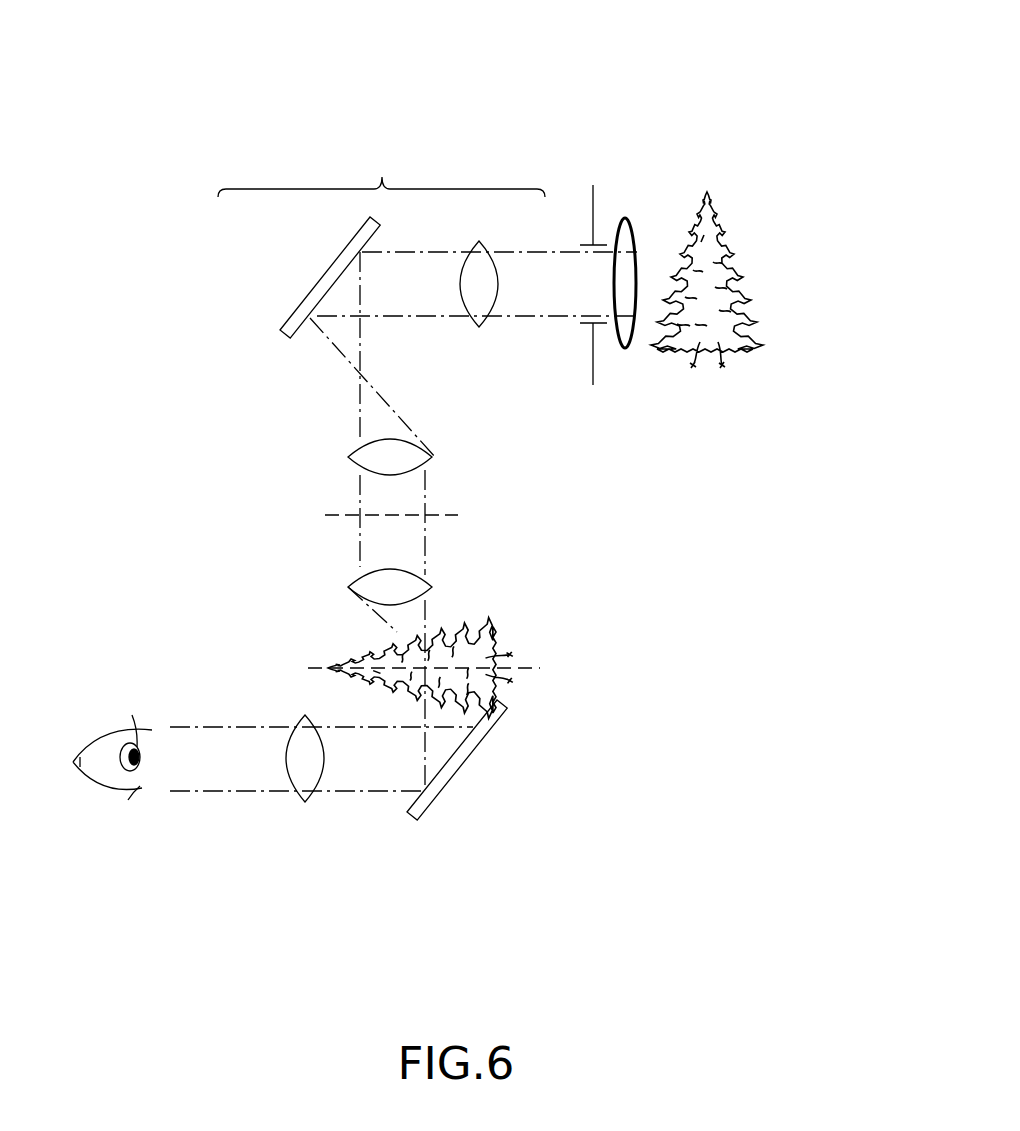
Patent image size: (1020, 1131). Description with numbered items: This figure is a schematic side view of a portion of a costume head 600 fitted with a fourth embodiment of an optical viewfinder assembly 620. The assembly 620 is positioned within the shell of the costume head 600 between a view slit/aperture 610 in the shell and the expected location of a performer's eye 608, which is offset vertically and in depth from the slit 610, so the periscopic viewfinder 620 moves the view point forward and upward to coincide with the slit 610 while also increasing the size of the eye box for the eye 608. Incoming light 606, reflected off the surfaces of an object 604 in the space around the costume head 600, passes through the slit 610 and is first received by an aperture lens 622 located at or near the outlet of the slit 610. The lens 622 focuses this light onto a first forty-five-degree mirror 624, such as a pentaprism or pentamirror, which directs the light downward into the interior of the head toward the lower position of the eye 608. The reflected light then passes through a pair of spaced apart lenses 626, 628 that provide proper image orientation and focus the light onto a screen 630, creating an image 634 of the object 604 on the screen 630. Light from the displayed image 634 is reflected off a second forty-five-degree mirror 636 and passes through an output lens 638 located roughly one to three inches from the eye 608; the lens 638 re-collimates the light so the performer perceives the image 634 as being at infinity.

The costume head 600 is at (697, 130).
The object 604 is at (747, 383).
The incoming light 606 is at (628, 230).
The performer's eye 608 is at (105, 779).
The view slit/aperture 610 is at (619, 301).
The optical viewfinder assembly 620 is at (381, 171).
The aperture lens 622 is at (479, 332).
The first 45-degree mirror 624 is at (307, 277).
The lens 626 is at (346, 453).
The lens 628 is at (346, 585).
The screen 630 is at (479, 680).
The image 634 is at (501, 607).
The second 45-degree mirror 636 is at (415, 826).
The output lens 638 is at (303, 712).